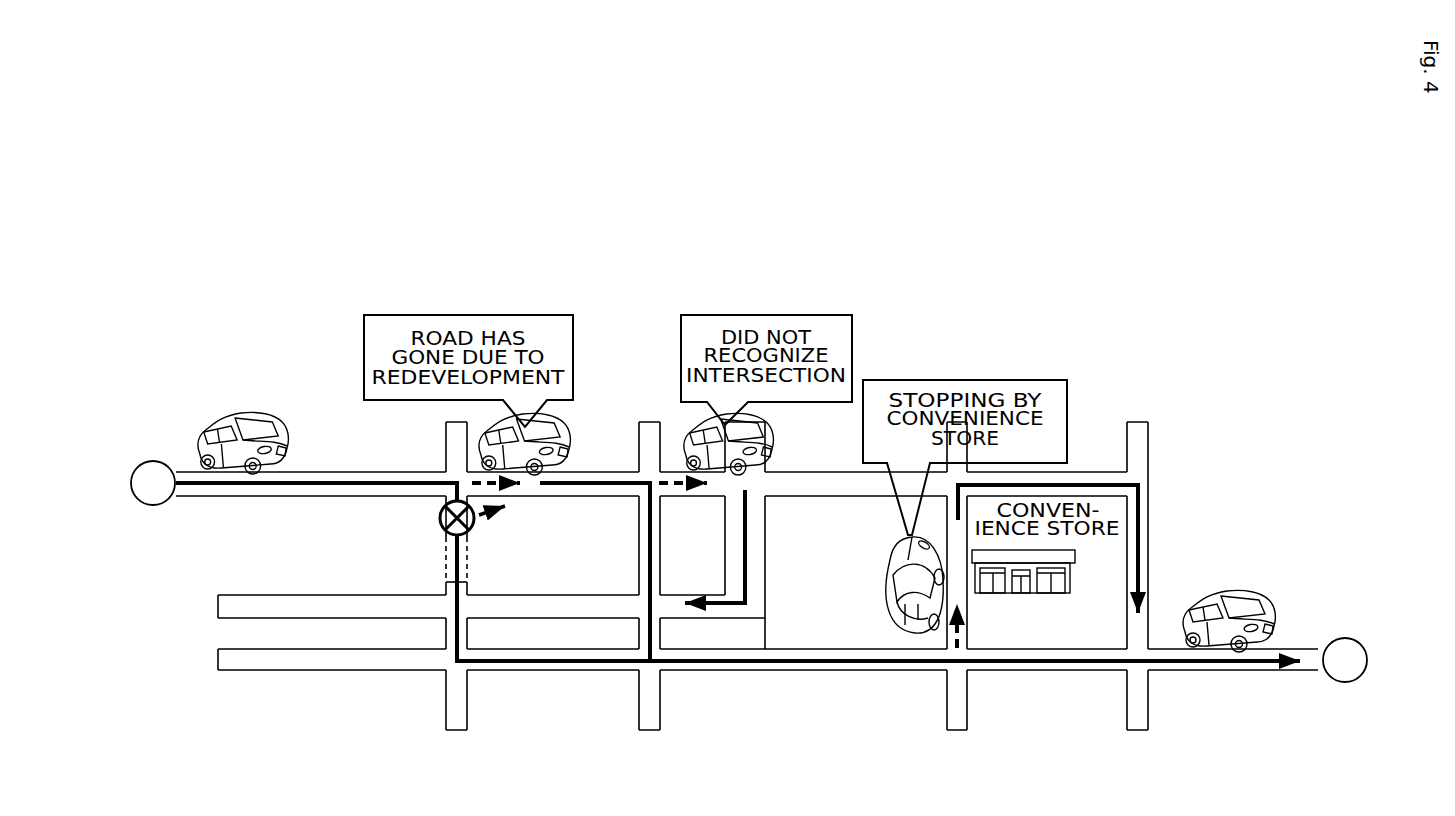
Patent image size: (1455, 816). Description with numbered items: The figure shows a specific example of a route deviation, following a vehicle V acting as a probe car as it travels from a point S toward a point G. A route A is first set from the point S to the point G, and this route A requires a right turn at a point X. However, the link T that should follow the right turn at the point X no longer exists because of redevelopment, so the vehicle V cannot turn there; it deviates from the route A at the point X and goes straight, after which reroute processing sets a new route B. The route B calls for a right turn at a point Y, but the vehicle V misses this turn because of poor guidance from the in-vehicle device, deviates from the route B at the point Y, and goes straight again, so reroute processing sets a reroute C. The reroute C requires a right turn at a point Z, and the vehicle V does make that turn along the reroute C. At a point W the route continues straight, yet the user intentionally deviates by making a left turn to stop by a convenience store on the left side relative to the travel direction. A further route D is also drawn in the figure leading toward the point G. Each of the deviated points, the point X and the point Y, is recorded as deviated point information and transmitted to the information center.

The point S is at (153, 483).
The point G is at (1345, 660).
The vehicle V is at (225, 405).
The route A is at (338, 478).
The route B is at (645, 568).
The reroute C is at (752, 569).
The route D is at (1144, 560).
The point X is at (445, 470).
The point Y is at (636, 495).
The point Z is at (771, 465).
The point W is at (969, 673).
The link T is at (445, 557).